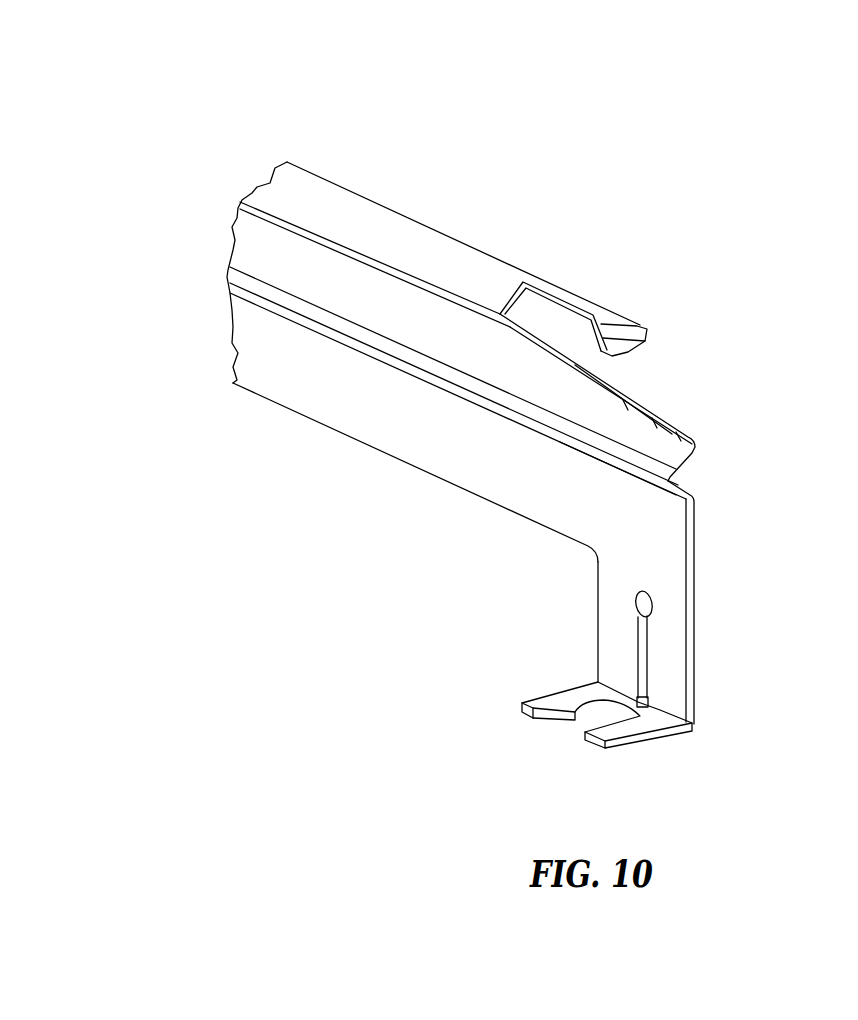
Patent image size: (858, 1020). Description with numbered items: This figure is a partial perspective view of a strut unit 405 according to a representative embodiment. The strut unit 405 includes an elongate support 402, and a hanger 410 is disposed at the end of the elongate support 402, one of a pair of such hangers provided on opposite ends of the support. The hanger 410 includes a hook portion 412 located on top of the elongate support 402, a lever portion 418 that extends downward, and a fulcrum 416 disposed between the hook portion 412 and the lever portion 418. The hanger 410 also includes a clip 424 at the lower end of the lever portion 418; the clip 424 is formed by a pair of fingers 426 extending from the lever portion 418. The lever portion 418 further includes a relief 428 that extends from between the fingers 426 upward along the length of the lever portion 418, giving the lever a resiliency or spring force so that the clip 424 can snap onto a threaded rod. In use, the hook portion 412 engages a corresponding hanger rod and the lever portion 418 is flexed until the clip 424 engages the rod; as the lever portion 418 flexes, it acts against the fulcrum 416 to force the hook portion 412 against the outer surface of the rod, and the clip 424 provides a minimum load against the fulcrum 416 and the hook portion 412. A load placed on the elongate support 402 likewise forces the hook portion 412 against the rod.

The strut unit 405 is at (466, 148).
The elongate support 402 is at (493, 243).
The hanger 410 is at (733, 428).
The hook portion 412 is at (610, 326).
The fulcrum 416 is at (565, 457).
The lever portion 418 is at (712, 578).
The clip 424 is at (540, 744).
The fingers 426 is at (555, 700).
The relief 428 is at (652, 667).